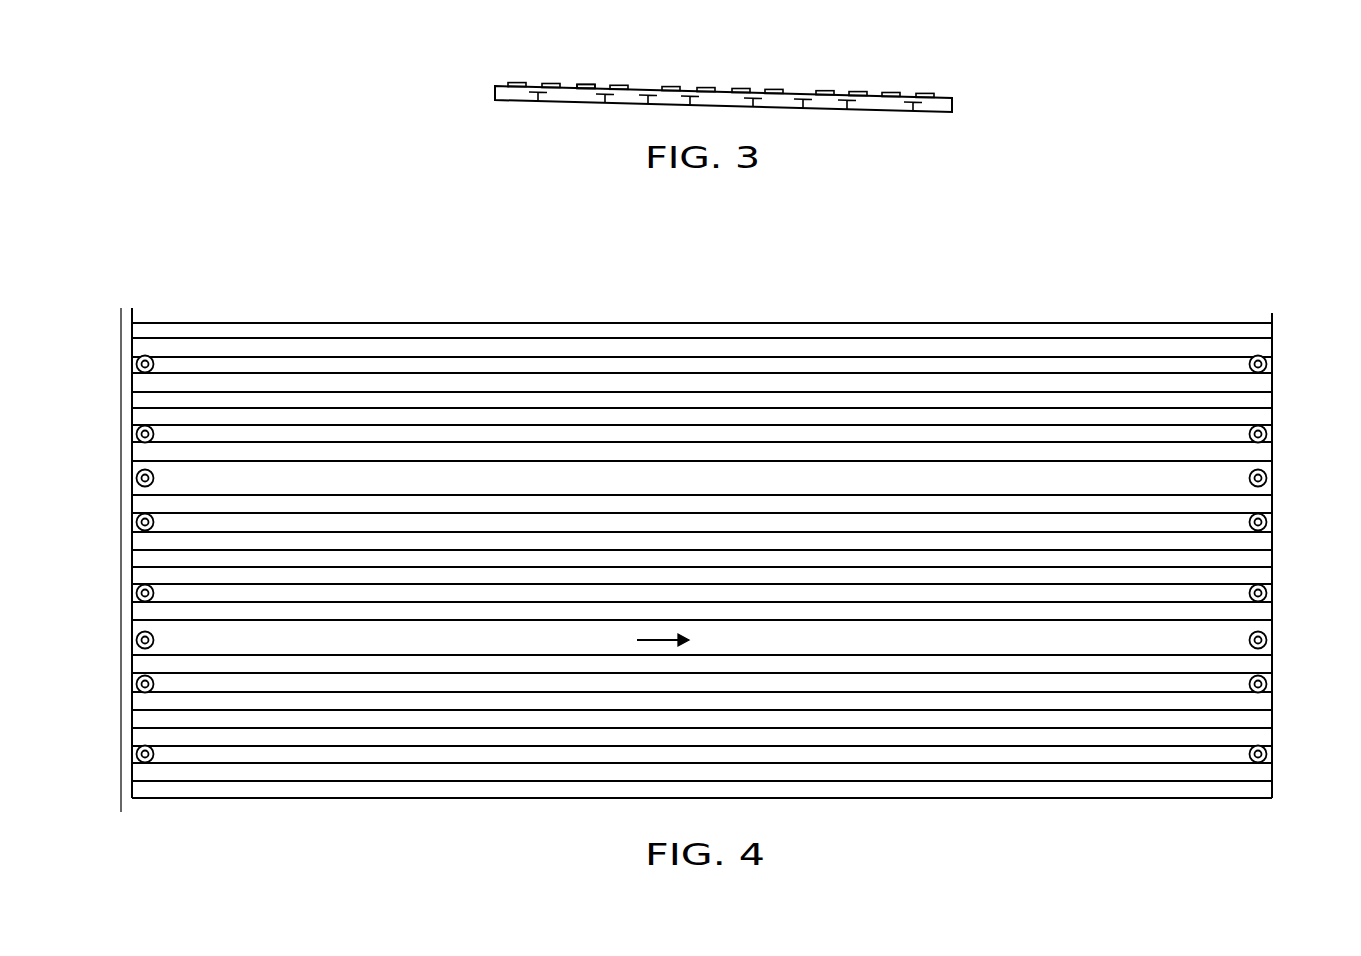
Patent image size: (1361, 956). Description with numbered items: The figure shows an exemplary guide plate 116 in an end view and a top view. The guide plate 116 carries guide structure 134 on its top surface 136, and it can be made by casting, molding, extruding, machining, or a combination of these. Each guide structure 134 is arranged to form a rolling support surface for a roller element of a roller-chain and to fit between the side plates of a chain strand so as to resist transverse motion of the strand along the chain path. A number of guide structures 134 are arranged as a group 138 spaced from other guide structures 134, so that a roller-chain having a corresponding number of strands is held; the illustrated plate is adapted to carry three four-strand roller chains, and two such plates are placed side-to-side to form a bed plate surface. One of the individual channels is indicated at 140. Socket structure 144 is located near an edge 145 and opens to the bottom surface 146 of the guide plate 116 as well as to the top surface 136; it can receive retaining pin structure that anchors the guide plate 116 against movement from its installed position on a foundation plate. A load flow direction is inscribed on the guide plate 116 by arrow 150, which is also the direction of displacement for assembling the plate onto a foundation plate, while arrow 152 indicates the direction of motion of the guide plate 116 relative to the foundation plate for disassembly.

In FIG. 3, the guide plate 116 is at (997, 70).
In FIG. 4, the guide plate 116 is at (1174, 279).
In FIG. 3, the guide structure 134 is at (675, 90).
In FIG. 4, the guide structure 134 is at (1262, 348).
In FIG. 3, the top surface 136 is at (598, 54).
In FIG. 4, the group 138 is at (1283, 497).
In FIG. 4, the single flow channel 140 is at (1282, 627).
In FIG. 3, the socket structure 144 is at (533, 112).
In FIG. 4, the socket structure 144 is at (1266, 478).
In FIG. 4, the edge 145 is at (1284, 725).
In FIG. 3, the bottom surface 146 is at (583, 130).
In FIG. 4, the arrow 150 is at (622, 480).
In FIG. 4, the arrow 152 is at (652, 642).